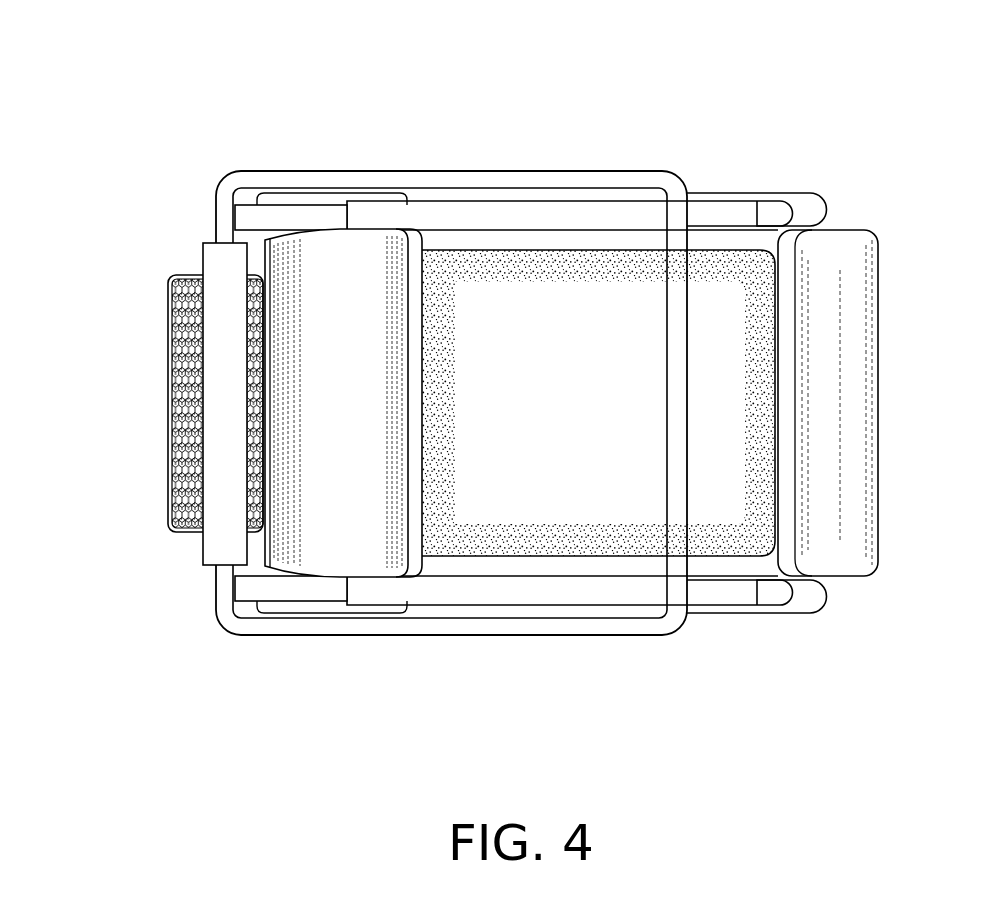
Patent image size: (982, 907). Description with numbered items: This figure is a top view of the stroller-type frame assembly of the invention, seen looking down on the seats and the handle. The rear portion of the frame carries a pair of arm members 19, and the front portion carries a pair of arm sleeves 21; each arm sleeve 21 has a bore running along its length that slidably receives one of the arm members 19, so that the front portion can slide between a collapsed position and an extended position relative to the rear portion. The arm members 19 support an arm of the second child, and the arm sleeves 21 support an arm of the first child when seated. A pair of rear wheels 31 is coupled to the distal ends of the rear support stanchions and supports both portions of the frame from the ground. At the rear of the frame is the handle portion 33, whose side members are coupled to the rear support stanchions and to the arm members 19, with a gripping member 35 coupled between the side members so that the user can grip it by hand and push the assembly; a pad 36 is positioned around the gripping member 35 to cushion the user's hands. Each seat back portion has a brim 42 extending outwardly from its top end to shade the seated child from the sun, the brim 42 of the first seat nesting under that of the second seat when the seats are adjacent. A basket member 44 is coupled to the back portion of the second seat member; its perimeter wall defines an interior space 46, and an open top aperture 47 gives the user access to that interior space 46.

The arm member 19 is at (295, 218).
The arm sleeve 21 is at (602, 215).
The rear wheel 31 is at (333, 200).
The handle portion 33 is at (222, 230).
The gripping member 35 is at (232, 437).
The pad 36 is at (227, 328).
The brim 42 is at (375, 365).
The basket member 44 is at (177, 533).
The interior space 46 is at (178, 483).
The open top aperture 47 is at (177, 385).